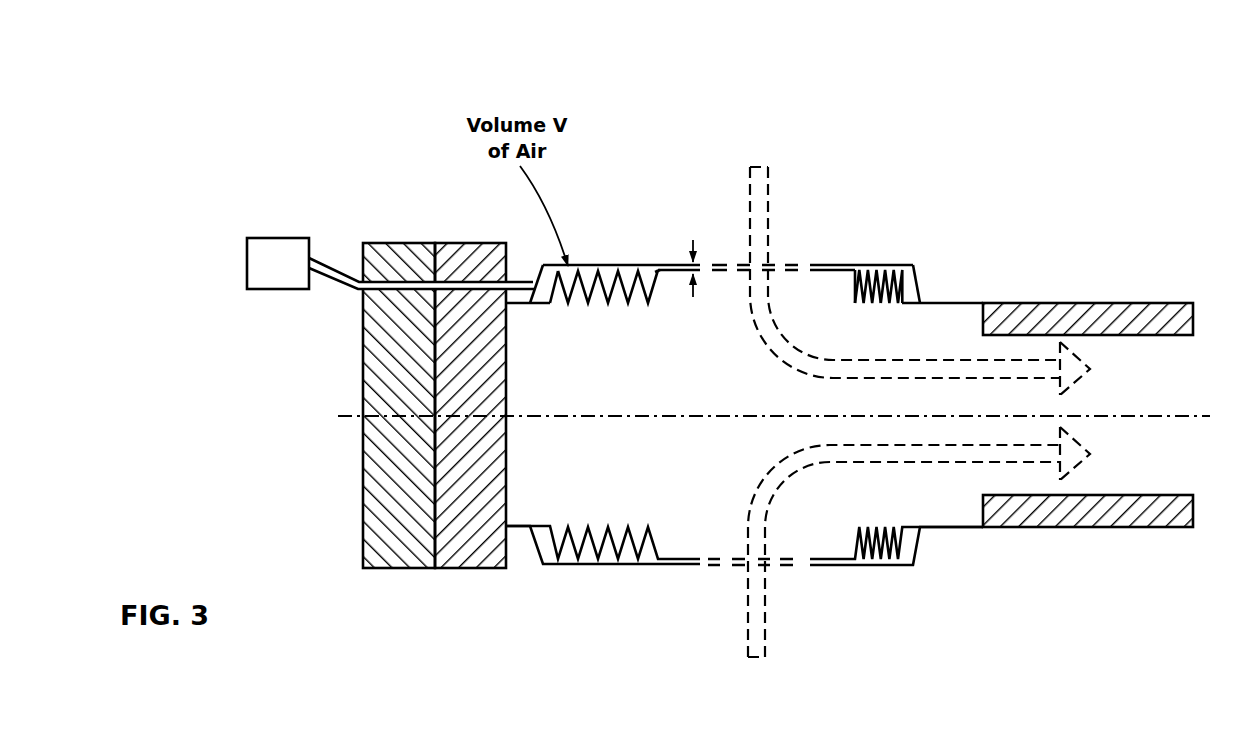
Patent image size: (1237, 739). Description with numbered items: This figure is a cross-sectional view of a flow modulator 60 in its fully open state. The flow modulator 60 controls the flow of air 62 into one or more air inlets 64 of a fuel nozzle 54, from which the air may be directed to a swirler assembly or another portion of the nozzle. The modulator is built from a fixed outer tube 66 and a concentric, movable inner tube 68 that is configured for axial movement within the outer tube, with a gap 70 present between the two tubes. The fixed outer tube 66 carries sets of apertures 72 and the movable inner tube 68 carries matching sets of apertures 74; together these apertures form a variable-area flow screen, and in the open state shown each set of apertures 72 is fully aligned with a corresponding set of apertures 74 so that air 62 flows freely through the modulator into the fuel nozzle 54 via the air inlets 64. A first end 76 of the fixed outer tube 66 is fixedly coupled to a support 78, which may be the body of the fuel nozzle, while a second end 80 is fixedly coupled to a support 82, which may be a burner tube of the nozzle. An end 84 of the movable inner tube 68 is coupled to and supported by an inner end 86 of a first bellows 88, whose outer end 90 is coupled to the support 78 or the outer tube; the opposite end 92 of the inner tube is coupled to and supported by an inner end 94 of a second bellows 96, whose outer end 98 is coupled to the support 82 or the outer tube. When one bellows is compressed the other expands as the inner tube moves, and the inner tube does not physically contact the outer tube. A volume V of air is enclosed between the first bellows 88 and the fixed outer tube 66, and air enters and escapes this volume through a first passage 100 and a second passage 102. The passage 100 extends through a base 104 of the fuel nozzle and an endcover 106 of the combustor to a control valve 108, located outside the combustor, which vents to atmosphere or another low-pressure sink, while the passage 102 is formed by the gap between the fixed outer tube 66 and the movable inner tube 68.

The fuel nozzle 54 is at (1143, 123).
The flow modulator 60 is at (912, 147).
The air 62 is at (768, 183).
The air inlet 64 is at (807, 235).
The fixed outer tube 66 is at (830, 264).
The movable inner tube 68 is at (820, 271).
The gap 70 is at (693, 242).
The apertures 72 is at (733, 257).
The apertures 74 is at (730, 277).
The first end 76 is at (536, 262).
The support 78 is at (513, 307).
The second end 80 is at (917, 278).
The support 82 is at (947, 301).
The end 84 is at (657, 275).
The inner end 86 is at (653, 275).
The first bellows 88 is at (590, 279).
The outer end 90 is at (557, 296).
The opposite end 92 is at (835, 272).
The inner end 94 is at (852, 285).
The second bellows 96 is at (889, 265).
The outer end 98 is at (913, 303).
The first passage 100 is at (531, 278).
The second passage 102 is at (664, 261).
The base 104 is at (508, 454).
The endcover 106 is at (363, 472).
The control valve 108 is at (259, 278).